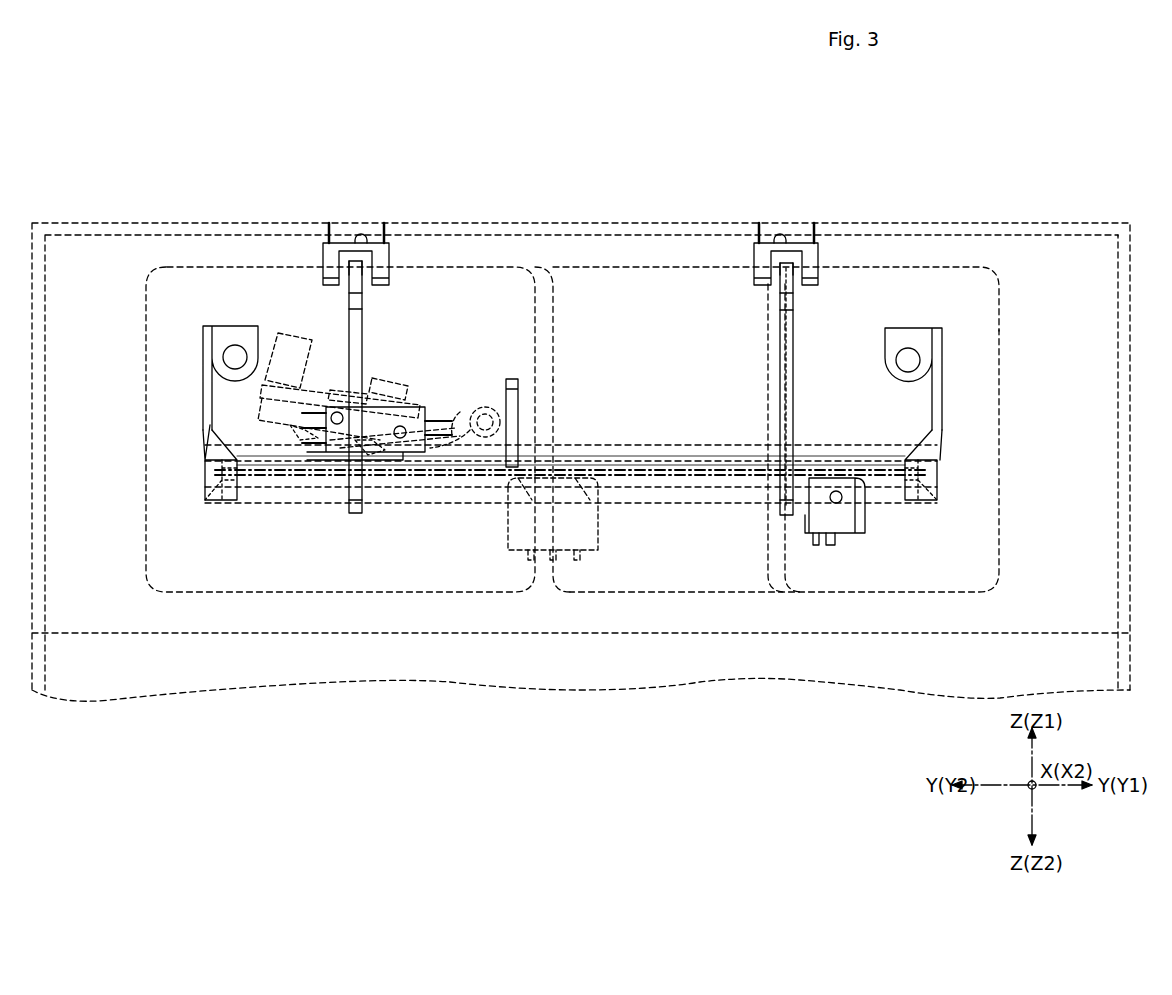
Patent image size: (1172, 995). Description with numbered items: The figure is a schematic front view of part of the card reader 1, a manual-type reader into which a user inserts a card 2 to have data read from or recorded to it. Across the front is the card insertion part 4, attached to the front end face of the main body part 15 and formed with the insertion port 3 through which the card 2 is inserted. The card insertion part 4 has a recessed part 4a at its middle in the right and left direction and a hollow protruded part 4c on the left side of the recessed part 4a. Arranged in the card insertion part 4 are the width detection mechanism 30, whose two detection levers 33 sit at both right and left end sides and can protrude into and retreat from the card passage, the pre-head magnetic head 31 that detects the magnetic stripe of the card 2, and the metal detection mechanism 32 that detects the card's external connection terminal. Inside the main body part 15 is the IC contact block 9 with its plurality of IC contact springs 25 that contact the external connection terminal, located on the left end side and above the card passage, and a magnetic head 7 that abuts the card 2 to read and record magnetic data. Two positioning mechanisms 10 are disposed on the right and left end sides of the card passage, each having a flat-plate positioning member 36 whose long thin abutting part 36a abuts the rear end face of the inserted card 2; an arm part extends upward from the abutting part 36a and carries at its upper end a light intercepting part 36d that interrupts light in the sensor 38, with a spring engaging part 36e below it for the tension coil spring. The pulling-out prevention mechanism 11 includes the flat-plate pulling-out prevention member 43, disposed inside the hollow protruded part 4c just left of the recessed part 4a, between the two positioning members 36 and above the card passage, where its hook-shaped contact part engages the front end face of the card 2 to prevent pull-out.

The card reader 1 is at (1082, 166).
The card 2 is at (704, 470).
The insertion port 3 is at (645, 480).
The card insertion part 4 is at (1000, 340).
The recessed part 4a is at (555, 300).
The protruded part 4c is at (146, 398).
The magnetic head 7 is at (506, 530).
The IC contact block 9 is at (482, 410).
The positioning mechanism 10 is at (318, 206).
The pulling-out prevention mechanism 11 is at (510, 350).
The main body part 15 is at (122, 223).
The IC contact springs 25 is at (298, 448).
The width detection mechanism 30 is at (952, 322).
The magnetic head (pre-head) 31 is at (866, 521).
The metal detection mechanism 32 is at (388, 400).
The detection levers 33 is at (233, 326).
The positioning member 36 is at (349, 324).
The abutting part 36a is at (355, 513).
The light intercepting part 36d is at (372, 276).
The spring engaging part 36e is at (362, 300).
The sensor 38 is at (323, 252).
The pulling-out prevention member 43 is at (518, 424).